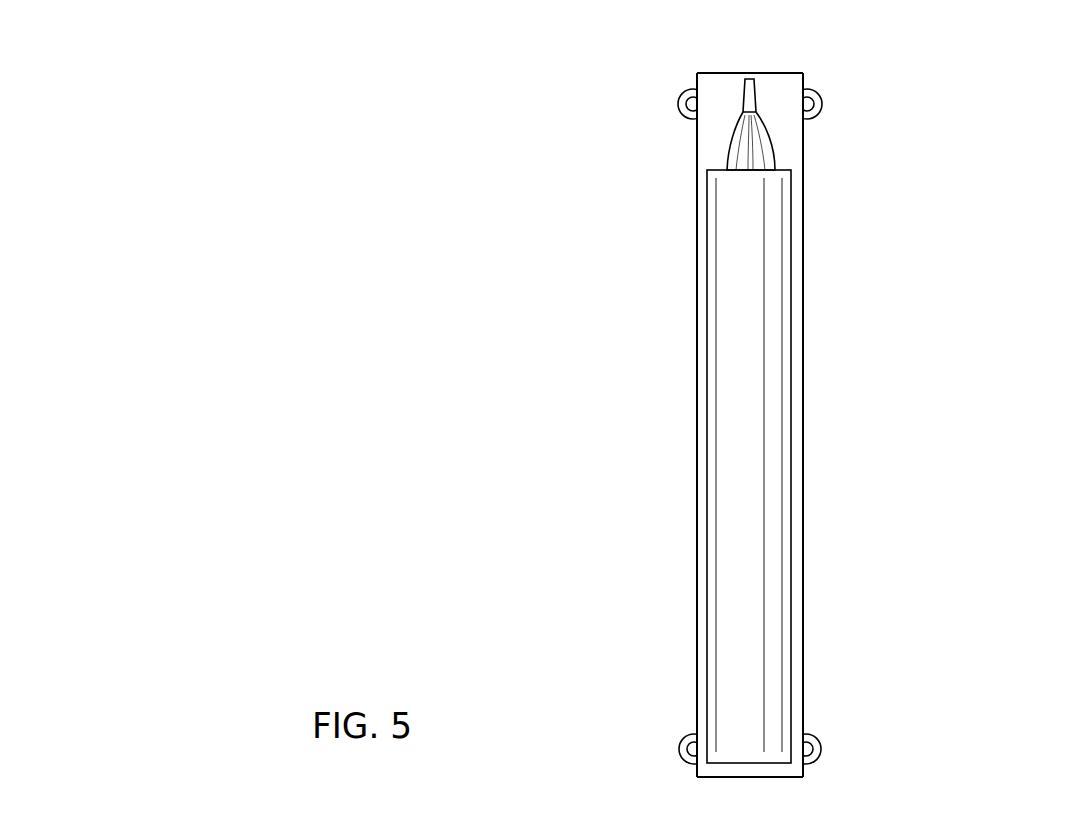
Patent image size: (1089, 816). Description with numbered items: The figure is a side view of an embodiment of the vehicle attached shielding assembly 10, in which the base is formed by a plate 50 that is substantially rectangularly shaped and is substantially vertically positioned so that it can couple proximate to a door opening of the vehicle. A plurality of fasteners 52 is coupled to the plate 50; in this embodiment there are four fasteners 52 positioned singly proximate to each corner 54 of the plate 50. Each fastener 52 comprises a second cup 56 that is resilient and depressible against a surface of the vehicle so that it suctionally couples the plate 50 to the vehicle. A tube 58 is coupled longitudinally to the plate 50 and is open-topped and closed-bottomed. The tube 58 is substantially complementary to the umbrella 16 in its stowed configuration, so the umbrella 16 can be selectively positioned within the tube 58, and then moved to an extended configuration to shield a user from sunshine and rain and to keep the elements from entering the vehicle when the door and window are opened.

The vehicle attached shielding assembly 10 is at (955, 133).
The umbrella 16 is at (757, 358).
The plate 50 is at (705, 136).
The fasteners 52 is at (699, 115).
The corner 54 is at (699, 72).
The second cup 56 is at (680, 740).
The tube 58 is at (757, 433).